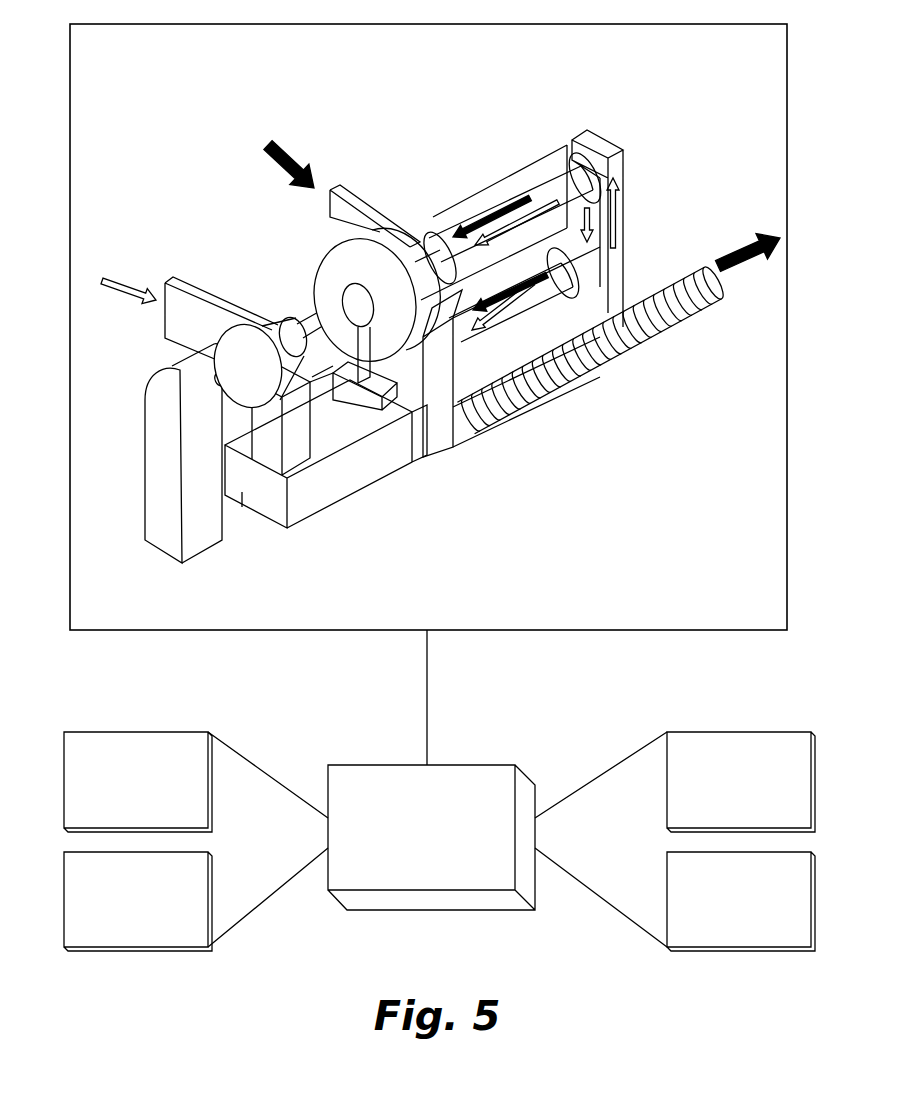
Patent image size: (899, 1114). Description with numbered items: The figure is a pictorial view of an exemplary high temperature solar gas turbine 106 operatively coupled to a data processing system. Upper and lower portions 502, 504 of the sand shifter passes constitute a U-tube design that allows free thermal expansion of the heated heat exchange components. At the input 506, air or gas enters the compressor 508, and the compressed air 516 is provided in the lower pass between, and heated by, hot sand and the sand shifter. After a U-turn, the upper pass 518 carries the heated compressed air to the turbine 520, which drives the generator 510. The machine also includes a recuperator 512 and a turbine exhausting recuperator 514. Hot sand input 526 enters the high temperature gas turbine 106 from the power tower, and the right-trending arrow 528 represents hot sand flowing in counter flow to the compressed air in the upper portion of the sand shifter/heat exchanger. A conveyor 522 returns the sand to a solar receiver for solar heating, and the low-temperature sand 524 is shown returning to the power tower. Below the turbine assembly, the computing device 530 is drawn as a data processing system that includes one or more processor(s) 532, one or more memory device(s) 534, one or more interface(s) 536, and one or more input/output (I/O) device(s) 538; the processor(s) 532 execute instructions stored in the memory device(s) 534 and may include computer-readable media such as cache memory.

The high temperature gas turbine 106 is at (677, 112).
The upper portion of the sand shifter passes 502 is at (545, 176).
The lower portion of the sand shifter passes 504 is at (615, 270).
The air or gas input 506 is at (122, 288).
The compressor 508 is at (190, 350).
The generator 510 is at (143, 442).
The recuperator 512 is at (349, 418).
The turbine exhausting recuperator 514 is at (455, 440).
The compressed air lower pass 516 is at (545, 302).
The upper pass 518 is at (505, 240).
The turbine 520 is at (310, 255).
The conveyor 522 is at (648, 346).
The low-temperature sand return 524 is at (748, 255).
The hot sand input 526 is at (278, 145).
The hot sand counter flow 528 is at (495, 212).
The computing device 530 is at (467, 765).
The processor(s) 532 is at (140, 732).
The memory device(s) 534 is at (150, 951).
The interface(s) 536 is at (752, 732).
The input/output (I/O) device(s) 538 is at (752, 951).